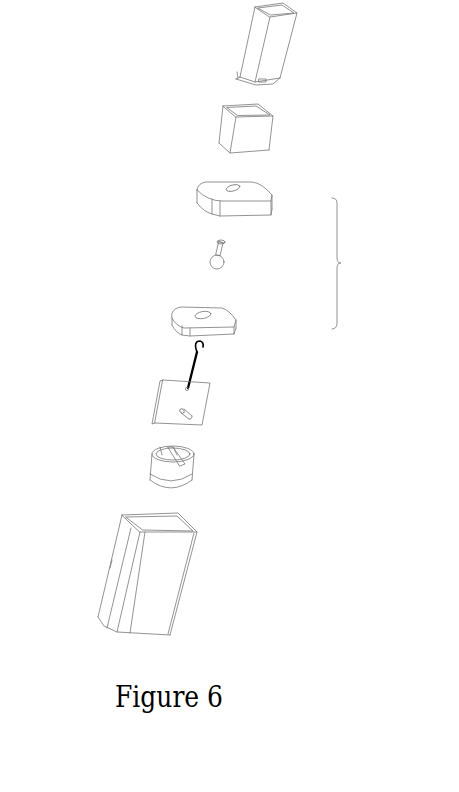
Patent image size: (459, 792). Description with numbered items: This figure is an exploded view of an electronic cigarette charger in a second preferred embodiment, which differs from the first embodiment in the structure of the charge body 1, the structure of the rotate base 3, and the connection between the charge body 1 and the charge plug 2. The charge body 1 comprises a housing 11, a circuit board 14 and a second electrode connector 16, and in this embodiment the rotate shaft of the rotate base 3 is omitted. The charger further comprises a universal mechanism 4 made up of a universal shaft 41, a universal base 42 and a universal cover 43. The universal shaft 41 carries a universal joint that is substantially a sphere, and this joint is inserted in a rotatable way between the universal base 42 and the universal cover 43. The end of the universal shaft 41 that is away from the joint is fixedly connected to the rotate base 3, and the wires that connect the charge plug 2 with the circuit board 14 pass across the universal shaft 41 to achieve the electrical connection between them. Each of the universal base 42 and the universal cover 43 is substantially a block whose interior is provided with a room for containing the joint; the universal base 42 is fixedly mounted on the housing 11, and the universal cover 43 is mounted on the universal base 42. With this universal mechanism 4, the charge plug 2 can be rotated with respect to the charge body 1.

The charge body 1 is at (88, 452).
The charge plug 2 is at (278, 47).
The rotate base 3 is at (265, 133).
The universal mechanism 4 is at (345, 263).
The universal shaft 41 is at (225, 263).
The universal base 42 is at (272, 205).
The universal cover 43 is at (235, 330).
The circuit board 14 is at (200, 402).
The second electrode connector 16 is at (183, 483).
The housing 11 is at (183, 582).